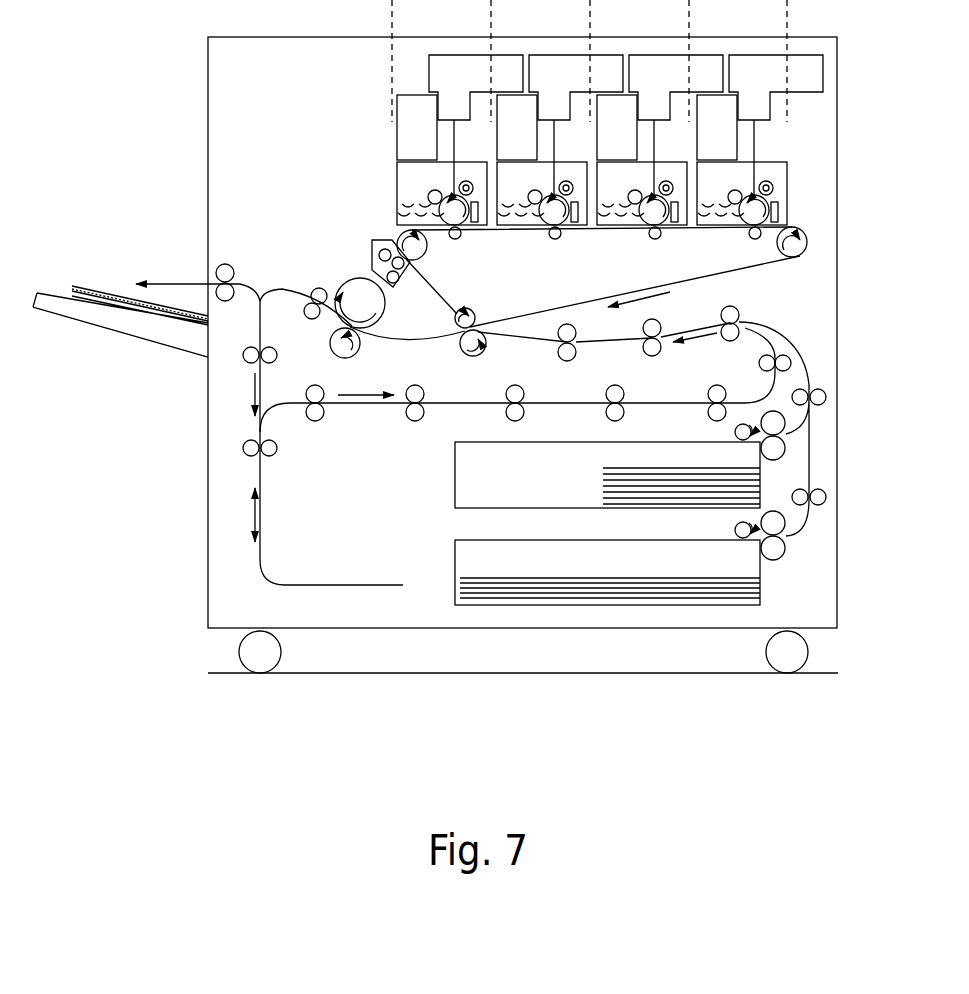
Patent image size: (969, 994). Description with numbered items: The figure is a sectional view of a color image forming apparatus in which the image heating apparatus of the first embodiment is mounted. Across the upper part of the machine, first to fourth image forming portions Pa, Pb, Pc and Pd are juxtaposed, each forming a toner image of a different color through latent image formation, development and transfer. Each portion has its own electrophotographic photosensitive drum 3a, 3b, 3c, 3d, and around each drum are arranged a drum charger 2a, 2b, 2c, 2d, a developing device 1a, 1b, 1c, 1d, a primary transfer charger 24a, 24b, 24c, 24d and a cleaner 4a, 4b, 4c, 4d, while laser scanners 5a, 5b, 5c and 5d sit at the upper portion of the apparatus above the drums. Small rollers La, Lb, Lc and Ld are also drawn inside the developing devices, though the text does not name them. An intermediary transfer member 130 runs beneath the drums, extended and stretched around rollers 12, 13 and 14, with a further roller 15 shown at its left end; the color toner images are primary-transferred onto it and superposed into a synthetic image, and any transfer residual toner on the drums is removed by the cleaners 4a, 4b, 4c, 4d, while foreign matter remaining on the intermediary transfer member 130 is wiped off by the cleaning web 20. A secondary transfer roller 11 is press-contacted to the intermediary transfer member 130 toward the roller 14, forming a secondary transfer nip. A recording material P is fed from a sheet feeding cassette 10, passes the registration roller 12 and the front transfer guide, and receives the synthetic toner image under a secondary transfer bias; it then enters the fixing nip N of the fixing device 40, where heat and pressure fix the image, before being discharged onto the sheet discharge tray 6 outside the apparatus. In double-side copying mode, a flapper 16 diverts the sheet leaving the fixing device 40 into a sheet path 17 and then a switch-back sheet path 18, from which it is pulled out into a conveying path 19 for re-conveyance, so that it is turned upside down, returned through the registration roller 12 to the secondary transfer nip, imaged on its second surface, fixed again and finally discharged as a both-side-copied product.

The laser scanner 5a is at (476, 125).
The laser scanner 5b is at (576, 125).
The laser scanner 5c is at (676, 125).
The laser scanner 5d is at (776, 125).
The developing device 1a is at (430, 205).
The developing device 1b is at (530, 205).
The developing device 1c is at (630, 205).
The developing device 1d is at (730, 205).
The developing roller La is at (445, 178).
The developing roller Lb is at (545, 178).
The developing roller Lc is at (645, 178).
The developing roller Ld is at (745, 178).
The drum charger 2a is at (466, 181).
The drum charger 2b is at (566, 181).
The drum charger 2c is at (666, 181).
The drum charger 2d is at (766, 181).
The electrophotographic photosensitive drum 3a is at (447, 224).
The electrophotographic photosensitive drum 3b is at (547, 224).
The electrophotographic photosensitive drum 3c is at (647, 224).
The electrophotographic photosensitive drum 3d is at (746, 223).
The cleaner 4a is at (476, 223).
The cleaner 4b is at (576, 223).
The cleaner 4c is at (676, 223).
The cleaner 4d is at (779, 213).
The primary transfer charger 24a is at (457, 240).
The primary transfer charger 24b is at (557, 240).
The primary transfer charger 24c is at (656, 240).
The primary transfer charger 24d is at (756, 240).
The first image forming portion Pa is at (488, 14).
The second image forming portion Pb is at (587, 14).
The third image forming portion Pc is at (686, 14).
The fourth image forming portion Pd is at (784, 14).
The roller 13 is at (808, 240).
The intermediary transfer member 130 is at (767, 266).
The belt tension roller 15 is at (398, 243).
The cleaning web 20 is at (372, 253).
The roller 14 is at (476, 319).
The secondary transfer roller 11 is at (486, 350).
The registration roller 12 is at (575, 356).
The fixing device 40 is at (343, 280).
The fixing nip N is at (358, 333).
The flapper 16 is at (266, 290).
The sheet path 17 is at (263, 382).
The switch-back sheet path 18 is at (263, 512).
The conveying path 19 is at (368, 405).
The sheet feeding cassette 10 is at (463, 487).
The recording material P is at (668, 475).
The sheet discharge tray 6 is at (147, 328).